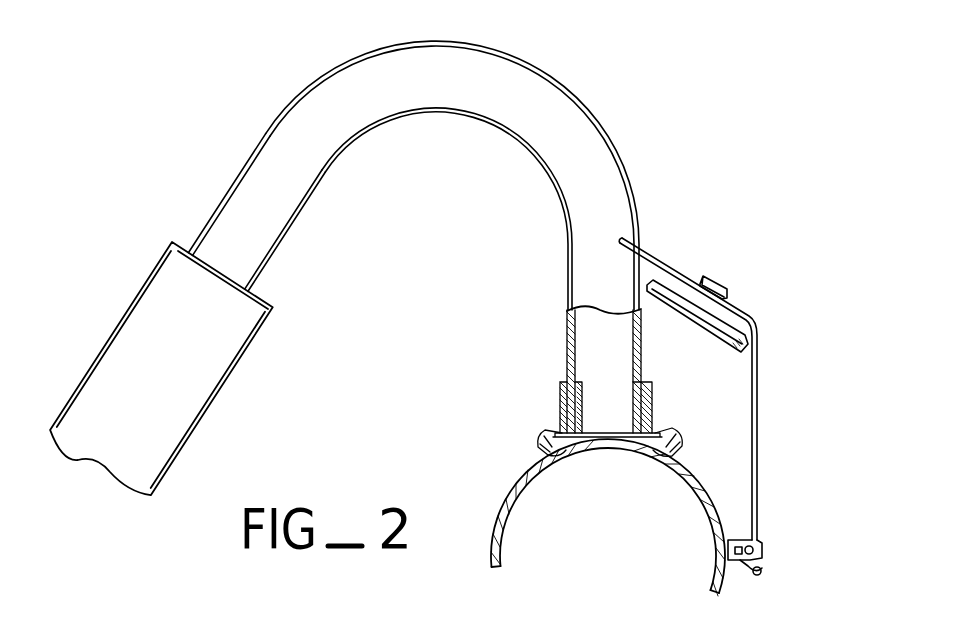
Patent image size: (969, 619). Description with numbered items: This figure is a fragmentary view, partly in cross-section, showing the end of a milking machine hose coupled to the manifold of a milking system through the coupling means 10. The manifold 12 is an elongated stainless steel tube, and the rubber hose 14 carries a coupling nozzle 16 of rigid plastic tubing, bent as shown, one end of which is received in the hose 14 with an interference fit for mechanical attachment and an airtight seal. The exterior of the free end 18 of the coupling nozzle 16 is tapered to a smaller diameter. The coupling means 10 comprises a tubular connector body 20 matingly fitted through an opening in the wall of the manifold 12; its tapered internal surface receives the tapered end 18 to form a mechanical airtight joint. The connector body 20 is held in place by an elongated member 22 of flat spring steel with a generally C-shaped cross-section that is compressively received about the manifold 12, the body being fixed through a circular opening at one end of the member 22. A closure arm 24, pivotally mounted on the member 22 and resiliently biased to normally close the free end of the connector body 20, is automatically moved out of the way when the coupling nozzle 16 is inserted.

The coupling means 10 is at (788, 465).
The manifold 12 is at (497, 500).
The hose 14 is at (218, 350).
The coupling nozzle 16 is at (301, 188).
The free end 18 is at (566, 346).
The tubular connector body 20 is at (564, 403).
The elongated member 22 is at (692, 454).
The closure arm 24 is at (759, 392).